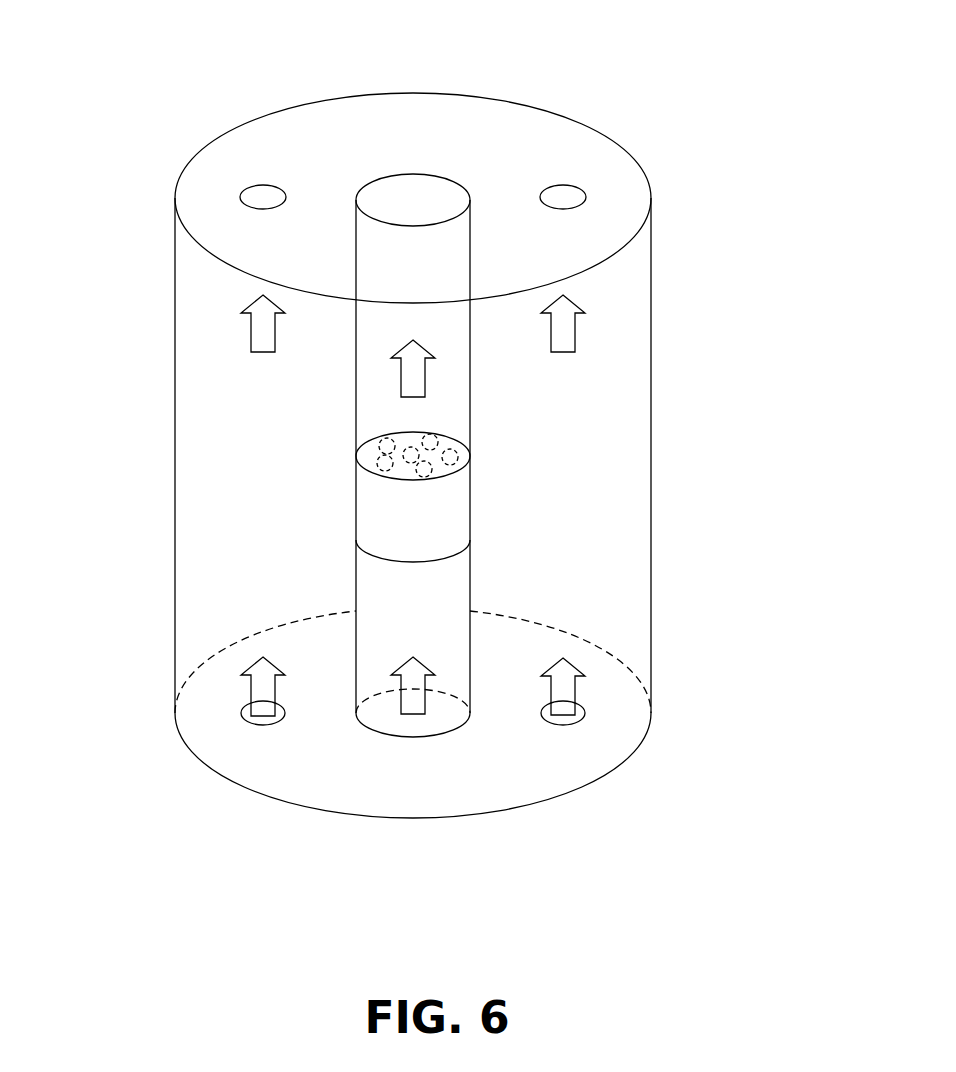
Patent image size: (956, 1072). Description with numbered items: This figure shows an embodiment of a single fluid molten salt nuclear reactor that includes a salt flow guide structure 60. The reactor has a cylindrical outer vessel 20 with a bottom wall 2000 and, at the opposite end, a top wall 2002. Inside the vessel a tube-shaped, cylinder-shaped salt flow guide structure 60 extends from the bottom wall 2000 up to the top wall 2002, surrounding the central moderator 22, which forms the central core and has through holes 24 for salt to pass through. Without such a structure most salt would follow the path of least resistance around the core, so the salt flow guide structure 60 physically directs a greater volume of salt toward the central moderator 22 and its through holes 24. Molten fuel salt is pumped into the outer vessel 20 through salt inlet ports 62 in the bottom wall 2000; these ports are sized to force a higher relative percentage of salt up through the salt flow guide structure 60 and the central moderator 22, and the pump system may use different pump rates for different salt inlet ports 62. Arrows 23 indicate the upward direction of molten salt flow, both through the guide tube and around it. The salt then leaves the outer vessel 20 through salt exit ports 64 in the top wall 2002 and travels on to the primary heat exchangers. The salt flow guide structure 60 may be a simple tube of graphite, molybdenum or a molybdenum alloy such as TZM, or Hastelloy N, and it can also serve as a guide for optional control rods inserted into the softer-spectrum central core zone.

The outer vessel 20 is at (421, 455).
The central moderator 22 is at (370, 517).
The arrows 23 is at (268, 337).
The through holes 24 is at (382, 462).
The salt flow guide structure 60 is at (450, 380).
The salt inlet ports 62 is at (263, 726).
The salt exit ports 64 is at (263, 185).
The bottom wall 2000 is at (242, 783).
The top wall 2002 is at (236, 140).